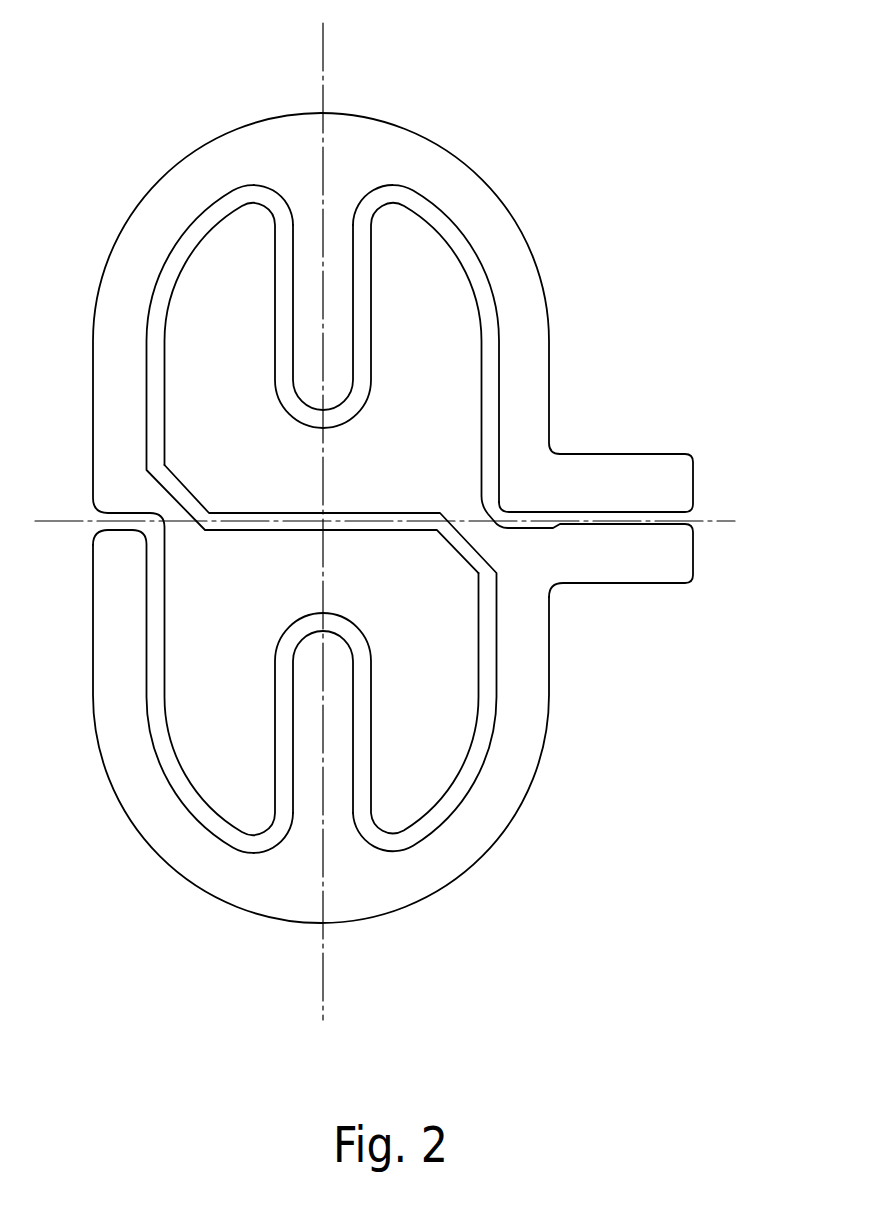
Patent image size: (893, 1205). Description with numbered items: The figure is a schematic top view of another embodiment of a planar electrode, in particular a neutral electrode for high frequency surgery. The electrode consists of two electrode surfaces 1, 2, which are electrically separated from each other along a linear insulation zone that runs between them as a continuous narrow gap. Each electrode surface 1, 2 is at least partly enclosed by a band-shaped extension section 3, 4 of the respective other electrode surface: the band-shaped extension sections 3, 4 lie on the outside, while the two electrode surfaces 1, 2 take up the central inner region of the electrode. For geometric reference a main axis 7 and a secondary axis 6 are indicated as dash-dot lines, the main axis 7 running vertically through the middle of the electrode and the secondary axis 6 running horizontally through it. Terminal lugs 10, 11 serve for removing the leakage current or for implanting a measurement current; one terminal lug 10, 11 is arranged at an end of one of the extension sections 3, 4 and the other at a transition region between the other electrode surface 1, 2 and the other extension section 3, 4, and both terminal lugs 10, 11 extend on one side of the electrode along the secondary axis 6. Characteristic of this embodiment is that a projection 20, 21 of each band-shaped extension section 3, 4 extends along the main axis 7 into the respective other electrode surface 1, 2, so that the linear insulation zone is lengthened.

The electrode surface 1 is at (440, 412).
The electrode surface 2 is at (453, 631).
The band-shaped extension section 3 is at (460, 847).
The band-shaped extension section 4 is at (510, 263).
The secondary axis 6 is at (728, 520).
The main axis 7 is at (322, 60).
The terminal lug 10 is at (667, 490).
The terminal lug 11 is at (623, 553).
The projection 20 is at (330, 703).
The projection 21 is at (323, 322).